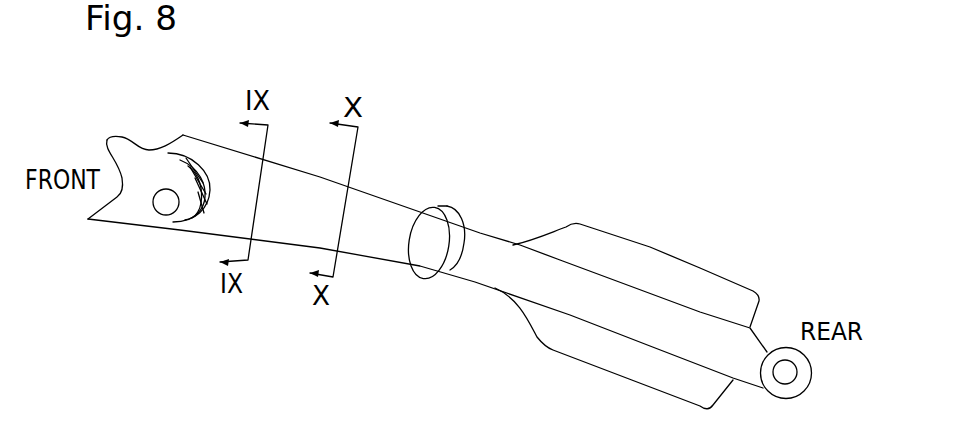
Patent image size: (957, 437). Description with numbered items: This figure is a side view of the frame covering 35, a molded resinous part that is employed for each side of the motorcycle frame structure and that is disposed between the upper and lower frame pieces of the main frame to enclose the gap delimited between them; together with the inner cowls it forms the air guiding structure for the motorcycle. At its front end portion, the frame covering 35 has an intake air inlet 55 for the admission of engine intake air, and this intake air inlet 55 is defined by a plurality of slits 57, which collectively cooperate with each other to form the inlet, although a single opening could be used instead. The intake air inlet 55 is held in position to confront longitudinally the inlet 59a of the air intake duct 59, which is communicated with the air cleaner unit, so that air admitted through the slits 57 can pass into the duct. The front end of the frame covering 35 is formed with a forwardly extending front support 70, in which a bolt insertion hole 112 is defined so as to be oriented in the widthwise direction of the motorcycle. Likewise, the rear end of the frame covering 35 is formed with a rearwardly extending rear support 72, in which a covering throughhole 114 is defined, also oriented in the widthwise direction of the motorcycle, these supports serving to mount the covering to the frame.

The front support 70 is at (143, 150).
The intake air inlet 55 is at (182, 134).
The slits 57 is at (212, 184).
The bolt insertion hole 112 is at (162, 210).
The inlet of the air intake duct 59a is at (418, 227).
The air intake duct 59 is at (462, 210).
The frame covering 35 is at (491, 224).
The covering throughhole 114 is at (780, 365).
The rear support 72 is at (774, 394).